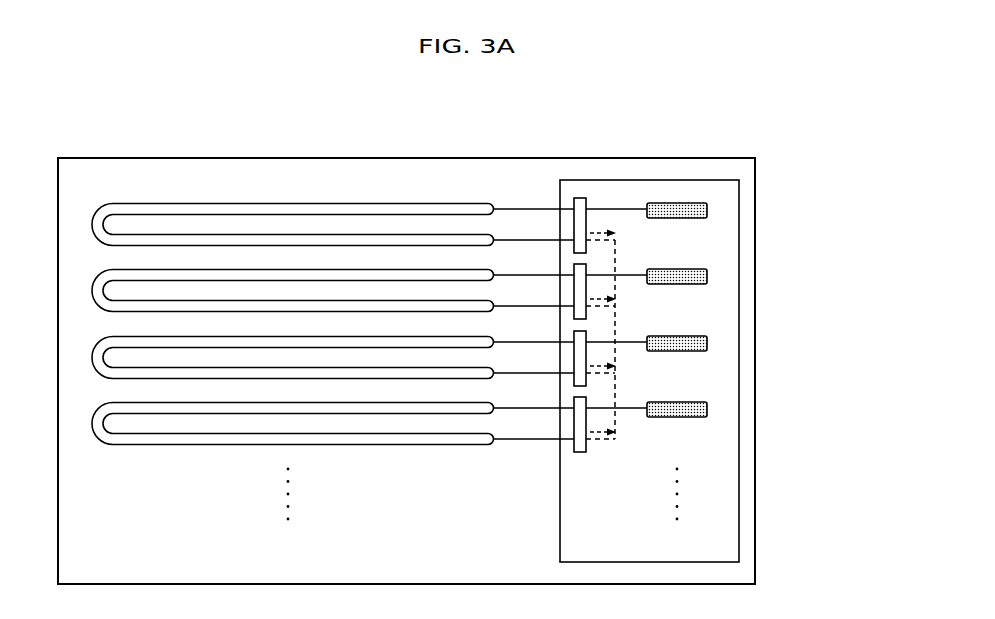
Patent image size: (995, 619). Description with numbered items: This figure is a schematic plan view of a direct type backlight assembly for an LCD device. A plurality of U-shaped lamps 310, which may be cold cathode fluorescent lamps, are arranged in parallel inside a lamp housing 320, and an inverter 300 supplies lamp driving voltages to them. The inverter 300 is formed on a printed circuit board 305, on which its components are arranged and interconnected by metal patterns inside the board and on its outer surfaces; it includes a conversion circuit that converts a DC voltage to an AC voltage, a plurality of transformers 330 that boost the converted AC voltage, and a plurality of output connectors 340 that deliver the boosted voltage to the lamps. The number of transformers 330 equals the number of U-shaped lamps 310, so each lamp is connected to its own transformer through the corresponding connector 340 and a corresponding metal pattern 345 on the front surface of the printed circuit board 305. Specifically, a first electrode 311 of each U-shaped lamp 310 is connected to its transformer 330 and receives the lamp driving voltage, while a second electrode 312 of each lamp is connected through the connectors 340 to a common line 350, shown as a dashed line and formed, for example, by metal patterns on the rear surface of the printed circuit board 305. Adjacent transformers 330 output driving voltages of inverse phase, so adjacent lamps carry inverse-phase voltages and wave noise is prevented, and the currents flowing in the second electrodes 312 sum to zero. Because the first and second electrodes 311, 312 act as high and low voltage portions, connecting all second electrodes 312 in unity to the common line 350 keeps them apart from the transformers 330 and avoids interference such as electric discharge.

The inverter 300 is at (749, 503).
The printed circuit board 305 is at (732, 452).
The U-shaped lamp 310 is at (321, 267).
The first electrode 311 is at (497, 208).
The second electrode 312 is at (493, 240).
The lamp housing 320 is at (203, 158).
The transformer 330 is at (682, 203).
The output connector 340 is at (577, 198).
The metal pattern 345 is at (615, 208).
The common line 350 is at (615, 323).